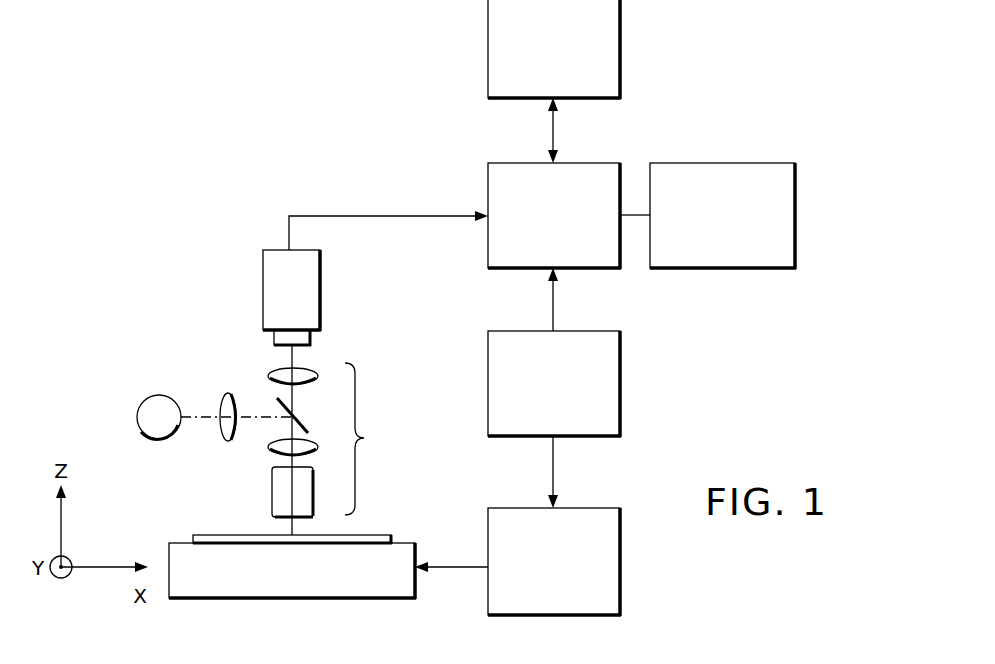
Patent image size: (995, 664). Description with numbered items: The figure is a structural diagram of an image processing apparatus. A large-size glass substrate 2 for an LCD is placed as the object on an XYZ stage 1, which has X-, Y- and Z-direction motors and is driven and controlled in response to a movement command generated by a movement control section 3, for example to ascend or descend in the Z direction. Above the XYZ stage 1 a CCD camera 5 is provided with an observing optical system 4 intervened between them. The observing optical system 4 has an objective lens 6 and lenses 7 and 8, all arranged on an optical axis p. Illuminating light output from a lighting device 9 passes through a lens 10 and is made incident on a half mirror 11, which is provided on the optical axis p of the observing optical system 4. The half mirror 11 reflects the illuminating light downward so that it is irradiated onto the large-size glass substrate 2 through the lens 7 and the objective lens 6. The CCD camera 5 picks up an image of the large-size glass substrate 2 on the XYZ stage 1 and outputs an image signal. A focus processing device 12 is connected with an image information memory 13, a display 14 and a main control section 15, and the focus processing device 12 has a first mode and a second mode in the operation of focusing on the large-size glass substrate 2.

The XYZ stage 1 is at (257, 585).
The large-size glass substrate 2 is at (376, 532).
The movement control section 3 is at (621, 565).
The observing optical system 4 is at (363, 439).
The CCD camera 5 is at (321, 290).
The objective lens 6 is at (272, 491).
The lens 7 is at (268, 452).
The lens 8 is at (273, 371).
The lighting device 9 is at (144, 409).
The lens 10 is at (219, 431).
The half mirror 11 is at (305, 420).
The focus processing device 12 is at (597, 162).
The image information memory 13 is at (614, 45).
The display 14 is at (761, 162).
The main control section 15 is at (621, 385).
The optical axis p is at (278, 397).